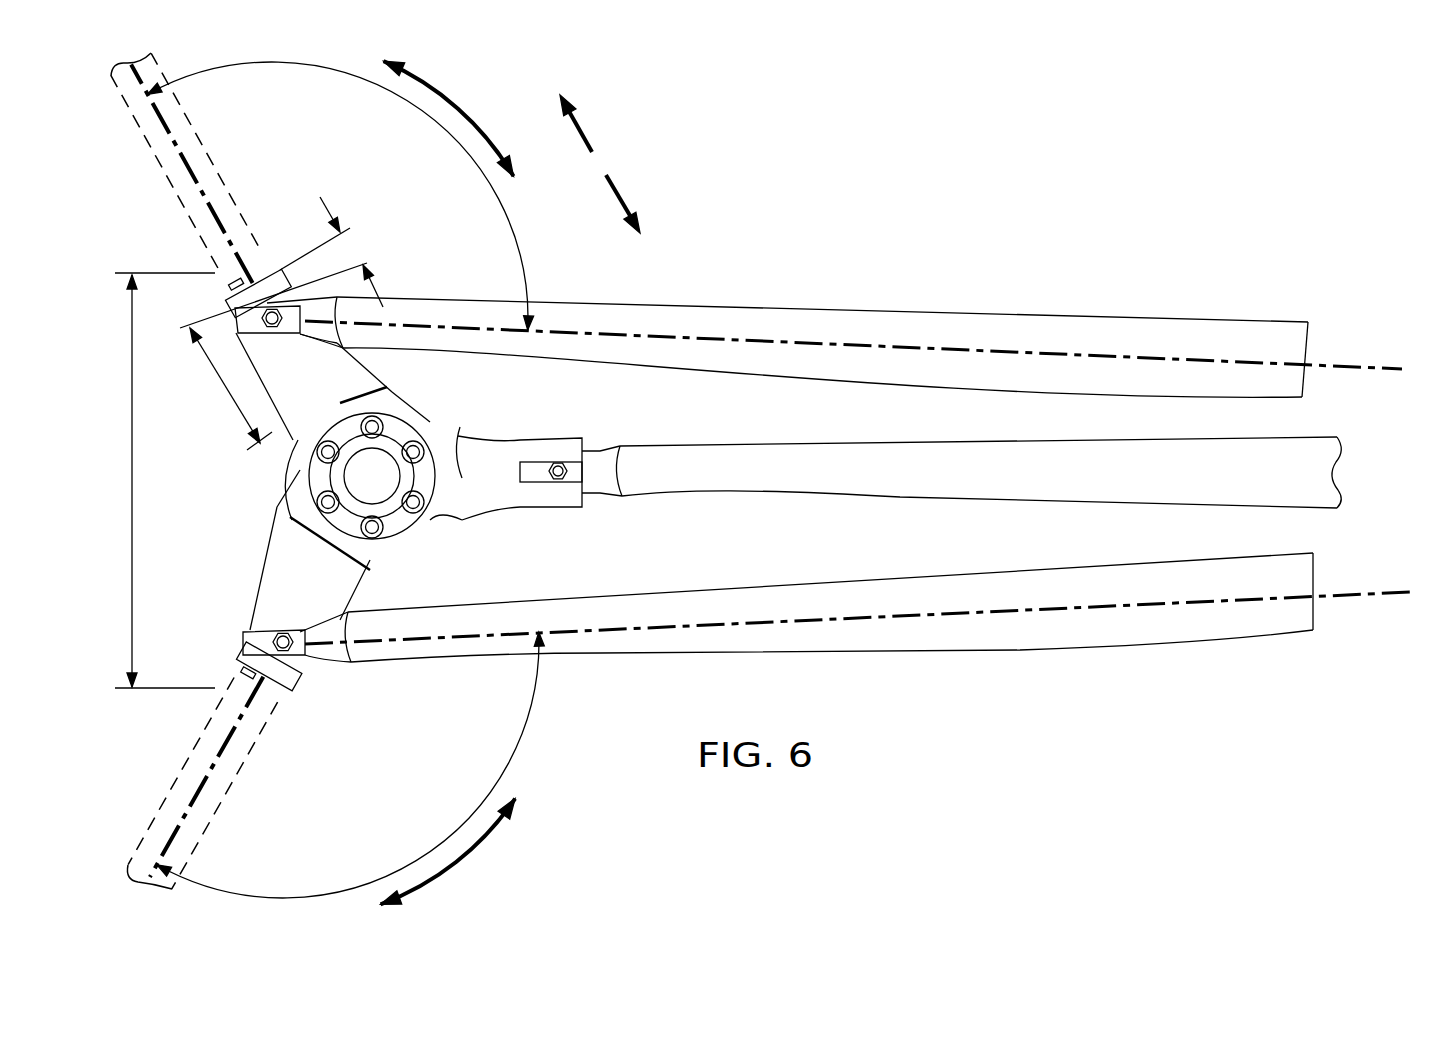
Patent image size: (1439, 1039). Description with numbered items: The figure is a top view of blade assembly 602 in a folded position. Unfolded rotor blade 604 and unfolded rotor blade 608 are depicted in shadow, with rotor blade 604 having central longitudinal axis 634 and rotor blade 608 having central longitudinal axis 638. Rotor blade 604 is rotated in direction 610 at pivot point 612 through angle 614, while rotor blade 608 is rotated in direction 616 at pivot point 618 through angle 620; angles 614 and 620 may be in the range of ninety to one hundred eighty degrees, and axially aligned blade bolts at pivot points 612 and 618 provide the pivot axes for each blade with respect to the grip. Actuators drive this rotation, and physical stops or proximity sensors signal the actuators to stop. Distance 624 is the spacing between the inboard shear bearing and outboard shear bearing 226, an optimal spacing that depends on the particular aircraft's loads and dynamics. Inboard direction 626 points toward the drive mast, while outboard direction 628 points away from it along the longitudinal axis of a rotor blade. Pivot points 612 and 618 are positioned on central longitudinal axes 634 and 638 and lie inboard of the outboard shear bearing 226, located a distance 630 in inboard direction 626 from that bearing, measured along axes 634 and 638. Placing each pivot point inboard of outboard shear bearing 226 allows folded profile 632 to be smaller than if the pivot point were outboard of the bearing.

The blade assembly 602 is at (838, 116).
The rotor blade 604 is at (177, 201).
The rotor blade 608 is at (175, 787).
The direction 610 is at (461, 102).
The pivot point 612 is at (276, 328).
The angle 614 is at (514, 226).
The direction 616 is at (461, 861).
The pivot point 618 is at (290, 630).
The angle 620 is at (521, 748).
The distance 624 is at (222, 384).
The inboard direction 626 is at (624, 192).
The outboard direction 628 is at (588, 132).
The distance 630 is at (321, 198).
The folded profile 632 is at (128, 485).
The central longitudinal axis 634 is at (1387, 366).
The central longitudinal axis 638 is at (1393, 596).
The outboard shear bearing 226 is at (268, 276).